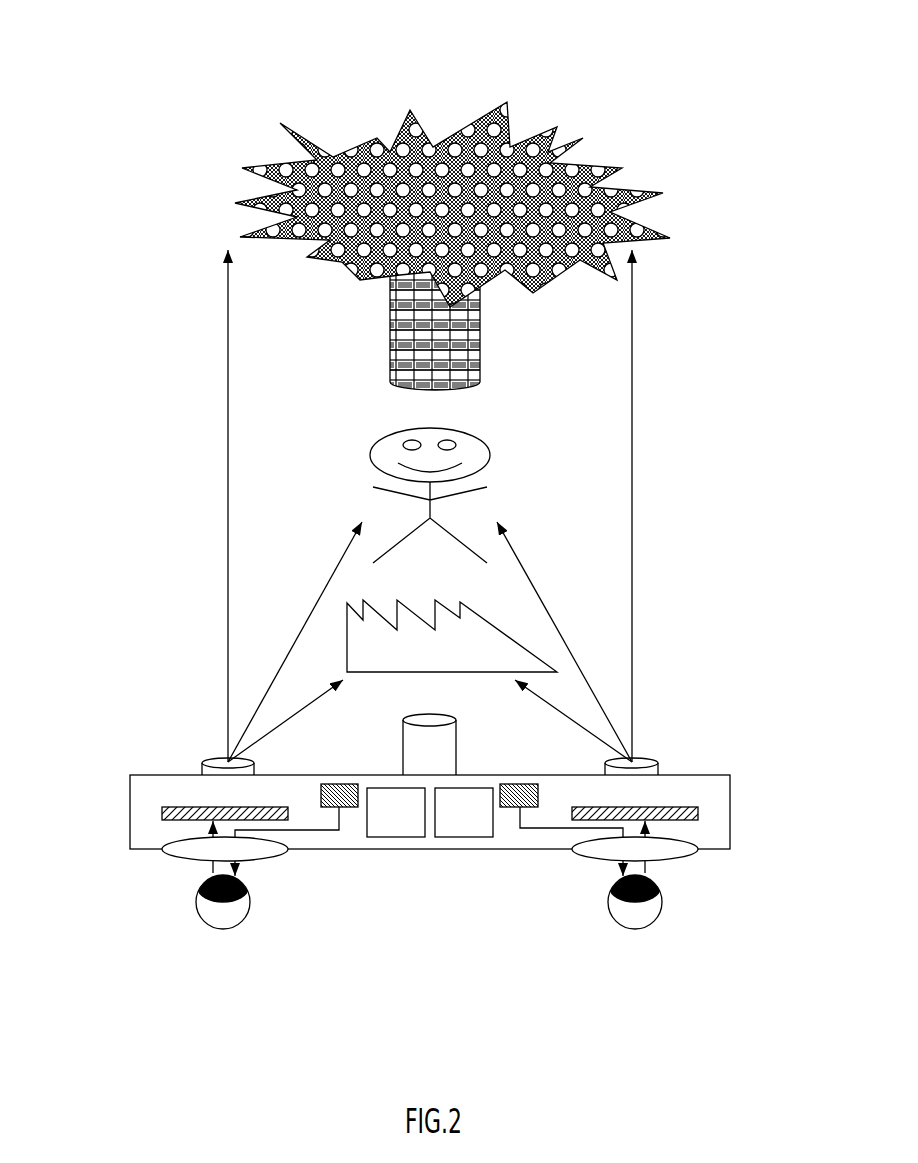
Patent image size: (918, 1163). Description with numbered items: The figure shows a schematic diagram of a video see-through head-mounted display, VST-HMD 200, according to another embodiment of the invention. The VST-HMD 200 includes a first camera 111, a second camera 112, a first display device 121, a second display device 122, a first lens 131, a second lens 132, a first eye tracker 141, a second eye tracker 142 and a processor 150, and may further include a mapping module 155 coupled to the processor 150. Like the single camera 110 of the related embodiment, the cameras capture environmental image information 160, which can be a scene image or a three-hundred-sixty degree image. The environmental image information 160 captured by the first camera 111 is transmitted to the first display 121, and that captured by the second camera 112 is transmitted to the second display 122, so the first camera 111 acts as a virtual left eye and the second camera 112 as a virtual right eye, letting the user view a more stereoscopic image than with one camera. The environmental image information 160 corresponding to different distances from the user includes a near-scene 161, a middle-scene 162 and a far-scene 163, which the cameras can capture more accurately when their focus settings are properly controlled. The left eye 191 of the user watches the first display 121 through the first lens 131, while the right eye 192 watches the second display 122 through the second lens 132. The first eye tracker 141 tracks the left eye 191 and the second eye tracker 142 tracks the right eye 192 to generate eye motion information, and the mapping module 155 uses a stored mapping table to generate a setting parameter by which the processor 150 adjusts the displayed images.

The camera 110 is at (400, 750).
The first camera 111 is at (202, 772).
The second camera 112 is at (658, 770).
The first display device 121 is at (162, 813).
The second display device 122 is at (698, 813).
The first lens 131 is at (185, 858).
The second lens 132 is at (670, 858).
The first eye tracker 141 is at (333, 784).
The second eye tracker 142 is at (520, 784).
The processor 150 is at (395, 837).
The mapping module 155 is at (455, 837).
The environmental image information 160 is at (88, 3).
The near-scene 161 is at (513, 638).
The middle-scene 162 is at (490, 453).
The far-scene 163 is at (593, 167).
The left eye 191 is at (225, 929).
The right eye 192 is at (635, 929).
The VST-HMD 200 is at (130, 775).